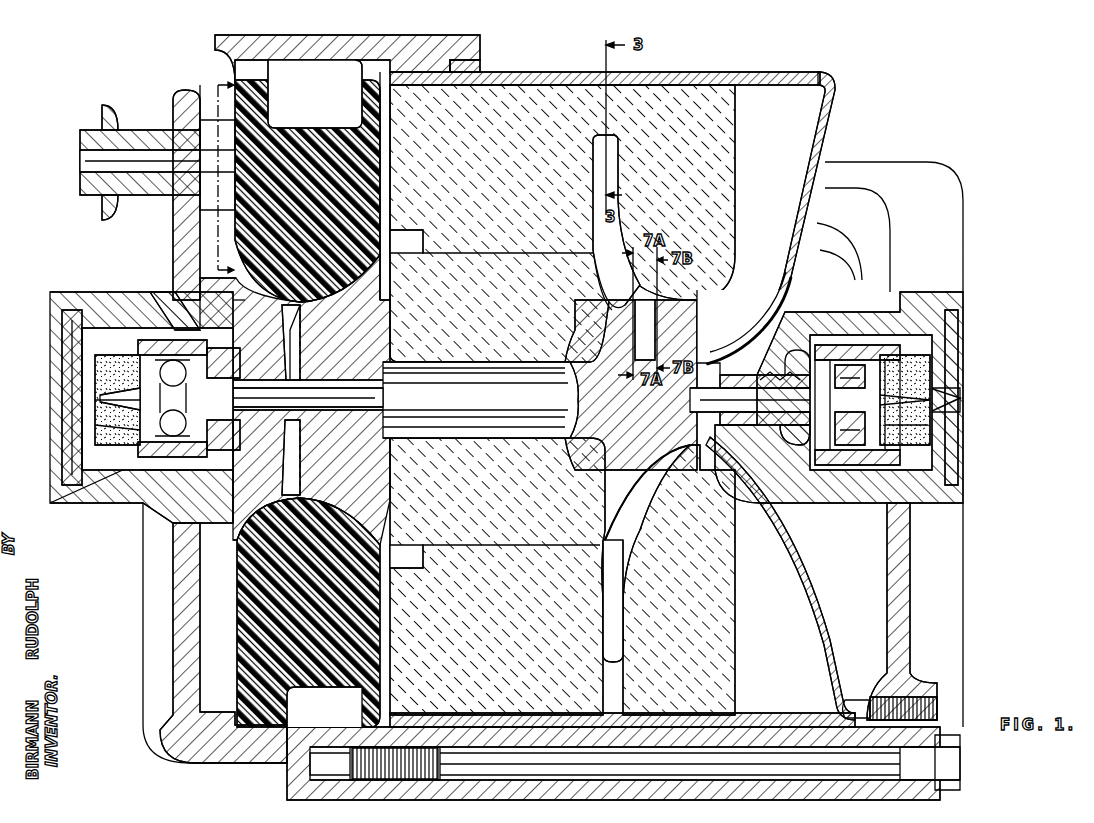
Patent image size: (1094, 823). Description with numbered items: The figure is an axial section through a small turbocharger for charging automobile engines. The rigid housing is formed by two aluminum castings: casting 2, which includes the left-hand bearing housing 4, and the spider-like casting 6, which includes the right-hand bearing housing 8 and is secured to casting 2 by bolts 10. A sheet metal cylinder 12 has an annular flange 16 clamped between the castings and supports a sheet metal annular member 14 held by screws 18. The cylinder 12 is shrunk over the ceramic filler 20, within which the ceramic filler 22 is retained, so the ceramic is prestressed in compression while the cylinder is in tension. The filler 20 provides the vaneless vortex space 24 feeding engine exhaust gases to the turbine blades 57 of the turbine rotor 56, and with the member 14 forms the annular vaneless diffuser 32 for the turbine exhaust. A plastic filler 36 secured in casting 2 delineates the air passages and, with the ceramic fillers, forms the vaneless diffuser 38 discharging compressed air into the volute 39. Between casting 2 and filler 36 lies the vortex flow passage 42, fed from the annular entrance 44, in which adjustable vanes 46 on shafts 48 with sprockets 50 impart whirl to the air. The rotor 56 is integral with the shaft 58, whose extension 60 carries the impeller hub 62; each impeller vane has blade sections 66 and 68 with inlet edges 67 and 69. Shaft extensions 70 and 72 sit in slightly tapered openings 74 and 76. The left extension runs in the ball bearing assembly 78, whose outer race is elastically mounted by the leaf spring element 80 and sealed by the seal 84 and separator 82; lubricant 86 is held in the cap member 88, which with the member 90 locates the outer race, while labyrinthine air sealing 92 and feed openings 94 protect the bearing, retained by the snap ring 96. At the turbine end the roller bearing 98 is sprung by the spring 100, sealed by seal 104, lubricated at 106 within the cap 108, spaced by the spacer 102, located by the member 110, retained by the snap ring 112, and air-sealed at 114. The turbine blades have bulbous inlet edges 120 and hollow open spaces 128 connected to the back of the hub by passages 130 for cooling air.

The casting 2 is at (244, 775).
The left-hand bearing housing 4 is at (120, 490).
The casting 6 is at (905, 645).
The right-hand bearing housing 8 is at (890, 310).
The bolts 10 is at (950, 760).
The sheet metal cylinder 12 is at (553, 80).
The sheet metal annular member 14 is at (828, 122).
The annular flange 16 is at (470, 68).
The screws 18 is at (930, 700).
The ceramic filler 20 is at (722, 130).
The ceramic filler 22 is at (600, 268).
The vaneless vortex space 24 is at (614, 178).
The annular vaneless diffuser 32 is at (765, 200).
The filler 36 is at (314, 132).
The vaneless diffuser 38 is at (384, 100).
The volute 39 is at (292, 100).
The vortex flow passage 42 is at (205, 235).
The annular entrance 44 is at (210, 80).
The vanes 46 is at (218, 168).
The shafts 48 is at (143, 155).
The sprockets 50 is at (104, 115).
The turbine rotor 56 is at (690, 345).
The turbine blades 57 is at (690, 312).
The shaft 58 is at (480, 400).
The extension 60 is at (285, 330).
The hub 62 is at (348, 325).
The blade section 66 is at (290, 455).
The inlet edge 67 is at (285, 305).
The blade section 68 is at (300, 490).
The inlet edge 69 is at (305, 340).
The shaft extension 70 is at (100, 405).
The shaft extension 72 is at (935, 403).
The tapered opening 74 is at (223, 363).
The tapered opening 76 is at (805, 385).
The ball bearing assembly 78 is at (165, 470).
The leaf spring element 80 is at (150, 365).
The separator 82 is at (100, 430).
The seal 84 is at (223, 435).
The sealed-in lubricant 86 is at (95, 375).
The cap member 88 is at (95, 395).
The member 90 is at (240, 318).
The labyrinthine air sealing 92 is at (258, 470).
The feed openings 94 is at (172, 300).
The snap ring 96 is at (62, 330).
The roller bearing 98 is at (865, 465).
The spring 100 is at (830, 465).
The spacer 102 is at (925, 372).
The seal 104 is at (800, 434).
The lubricant 106 is at (930, 430).
The cap 108 is at (935, 422).
The member 110 is at (760, 458).
The snap ring 112 is at (958, 323).
The labyrinthine air sealing 114 is at (768, 366).
The bulbous inlet edge 120 is at (606, 283).
The open space 128 is at (632, 535).
The passages 130 is at (645, 335).